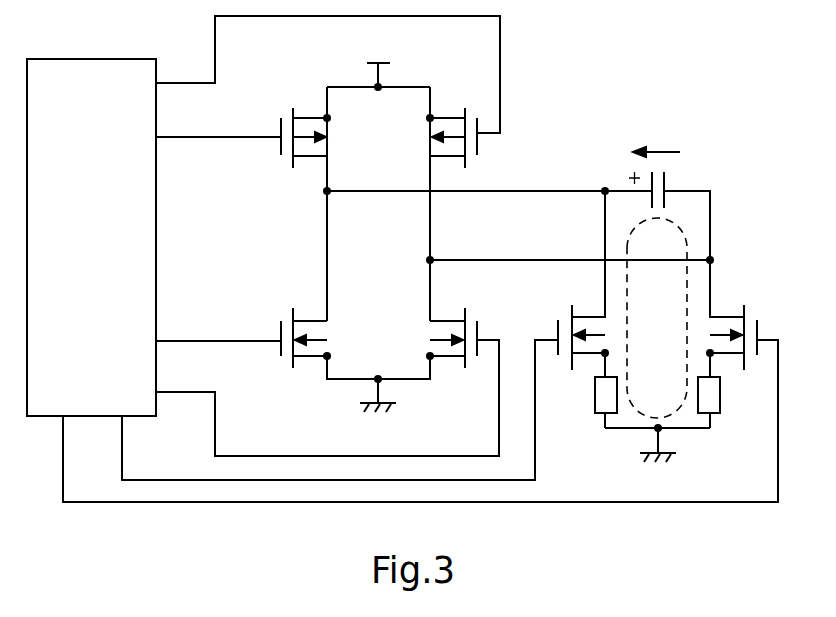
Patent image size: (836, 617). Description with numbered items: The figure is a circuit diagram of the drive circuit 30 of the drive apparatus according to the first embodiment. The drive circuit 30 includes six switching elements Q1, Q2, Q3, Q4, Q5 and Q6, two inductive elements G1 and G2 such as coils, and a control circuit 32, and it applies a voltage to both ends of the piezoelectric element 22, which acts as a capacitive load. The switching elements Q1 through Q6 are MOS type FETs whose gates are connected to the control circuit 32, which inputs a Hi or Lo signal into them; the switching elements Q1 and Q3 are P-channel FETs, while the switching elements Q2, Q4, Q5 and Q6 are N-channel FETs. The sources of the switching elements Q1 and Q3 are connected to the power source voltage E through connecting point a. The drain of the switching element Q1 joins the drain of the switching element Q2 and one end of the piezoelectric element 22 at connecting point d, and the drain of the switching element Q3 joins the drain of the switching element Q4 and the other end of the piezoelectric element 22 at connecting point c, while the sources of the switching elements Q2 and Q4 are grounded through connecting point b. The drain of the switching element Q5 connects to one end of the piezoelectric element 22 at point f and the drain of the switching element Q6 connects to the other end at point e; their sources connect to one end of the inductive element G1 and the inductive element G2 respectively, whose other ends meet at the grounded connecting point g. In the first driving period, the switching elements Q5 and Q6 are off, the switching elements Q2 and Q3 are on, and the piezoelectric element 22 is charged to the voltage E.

The drive circuit 30 is at (680, 80).
The control circuit 32 is at (94, 59).
The piezoelectric element 22 is at (669, 170).
The switching element Q1 is at (468, 108).
The switching element Q2 is at (474, 378).
The switching element Q3 is at (288, 108).
The switching element Q4 is at (286, 378).
The switching element Q5 is at (750, 312).
The switching element Q6 is at (564, 320).
The inductive element G1 is at (720, 393).
The inductive element G2 is at (595, 393).